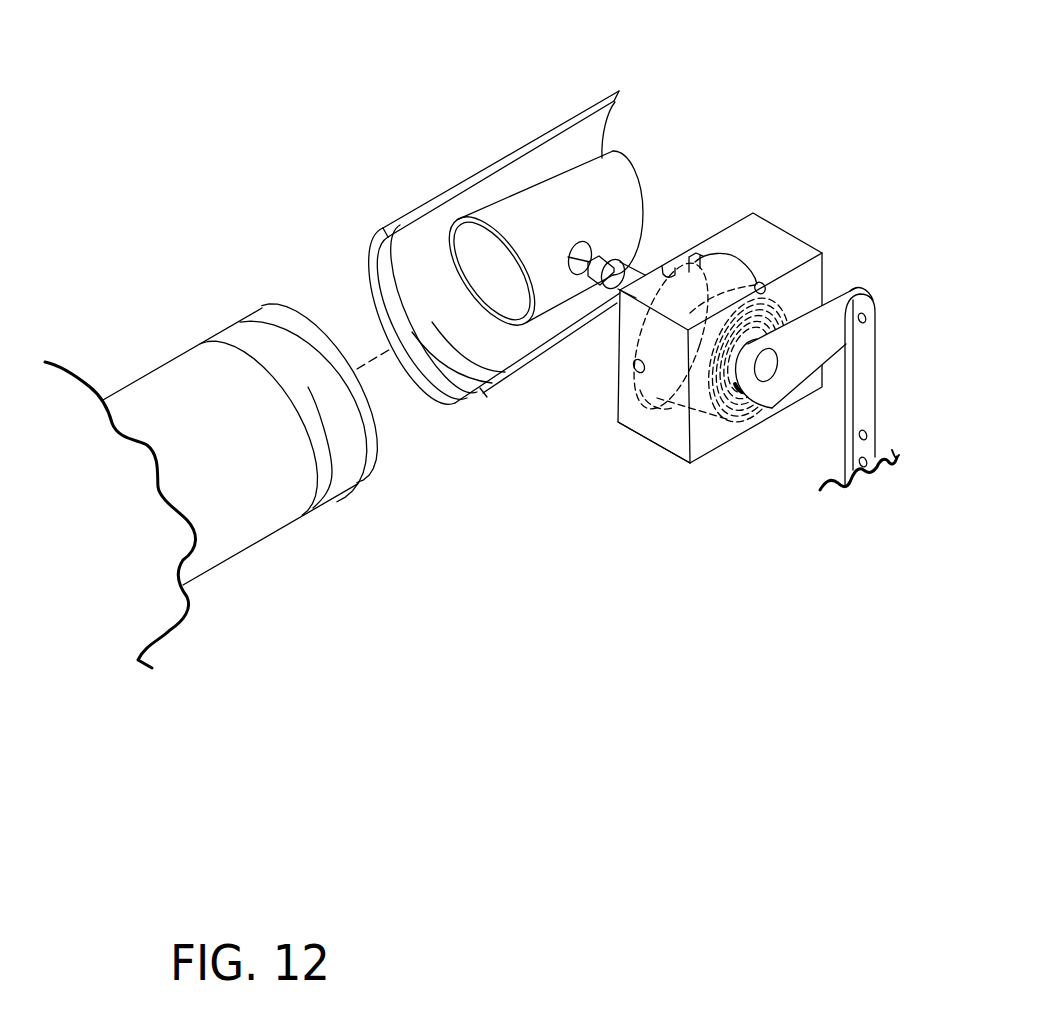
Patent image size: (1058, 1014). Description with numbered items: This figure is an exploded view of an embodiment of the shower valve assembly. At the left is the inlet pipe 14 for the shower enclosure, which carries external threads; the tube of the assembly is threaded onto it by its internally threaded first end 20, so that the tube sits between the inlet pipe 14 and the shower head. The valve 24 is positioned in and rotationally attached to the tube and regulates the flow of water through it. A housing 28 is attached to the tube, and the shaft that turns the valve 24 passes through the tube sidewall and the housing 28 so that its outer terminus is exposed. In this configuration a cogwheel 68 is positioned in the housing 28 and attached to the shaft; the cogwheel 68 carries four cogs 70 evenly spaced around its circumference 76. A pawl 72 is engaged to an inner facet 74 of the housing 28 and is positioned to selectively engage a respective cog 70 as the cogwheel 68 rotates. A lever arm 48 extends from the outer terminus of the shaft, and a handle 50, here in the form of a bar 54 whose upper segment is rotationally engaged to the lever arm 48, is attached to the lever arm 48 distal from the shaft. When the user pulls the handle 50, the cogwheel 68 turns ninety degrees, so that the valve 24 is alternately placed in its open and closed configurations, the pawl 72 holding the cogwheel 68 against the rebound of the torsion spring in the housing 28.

The inlet pipe 14 is at (168, 362).
The first end 20 is at (447, 410).
The valve 24 is at (790, 310).
The housing 28 is at (670, 461).
The lever arm 48 is at (813, 331).
The handle 50 is at (880, 368).
The bar 54 is at (875, 392).
The cogwheel 68 is at (725, 254).
The cogs 70 is at (760, 284).
The pawl 72 is at (675, 267).
The inner facet 74 is at (662, 266).
The circumference 76 is at (657, 397).